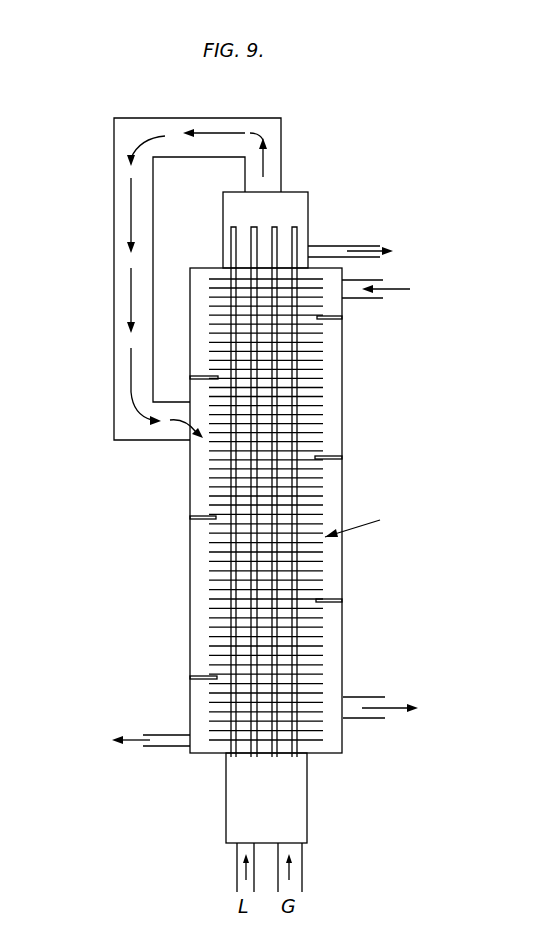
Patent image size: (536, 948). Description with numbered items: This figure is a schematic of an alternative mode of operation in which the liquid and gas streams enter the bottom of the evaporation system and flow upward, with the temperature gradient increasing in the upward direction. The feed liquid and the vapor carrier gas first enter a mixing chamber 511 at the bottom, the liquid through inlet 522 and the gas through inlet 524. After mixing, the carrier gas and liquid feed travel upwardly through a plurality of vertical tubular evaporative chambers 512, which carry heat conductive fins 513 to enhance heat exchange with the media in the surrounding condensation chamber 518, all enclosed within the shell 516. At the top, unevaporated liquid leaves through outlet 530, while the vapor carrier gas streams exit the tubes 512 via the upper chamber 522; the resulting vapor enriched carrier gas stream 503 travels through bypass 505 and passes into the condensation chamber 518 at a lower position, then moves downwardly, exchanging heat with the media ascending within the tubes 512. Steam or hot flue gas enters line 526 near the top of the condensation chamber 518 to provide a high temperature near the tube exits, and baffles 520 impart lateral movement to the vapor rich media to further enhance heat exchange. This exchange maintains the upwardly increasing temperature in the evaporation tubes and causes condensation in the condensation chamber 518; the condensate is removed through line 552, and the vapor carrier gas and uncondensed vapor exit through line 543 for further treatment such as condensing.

The vapor enriched carrier gas stream 503 is at (263, 159).
The bypass 505 is at (114, 270).
The mixing chamber 511 is at (307, 792).
The tubular evaporative chambers 512 is at (305, 565).
The heat conductive fins 513 is at (318, 498).
The shell 516 is at (342, 362).
The condensation chamber 518 is at (373, 523).
The baffles 520 is at (328, 455).
The liquid inlet / chamber 522 is at (308, 197).
The gas inlet 524 is at (302, 865).
The line 526 is at (363, 300).
The outlet 530 is at (330, 245).
The line 543 is at (370, 695).
The line 552 is at (150, 733).